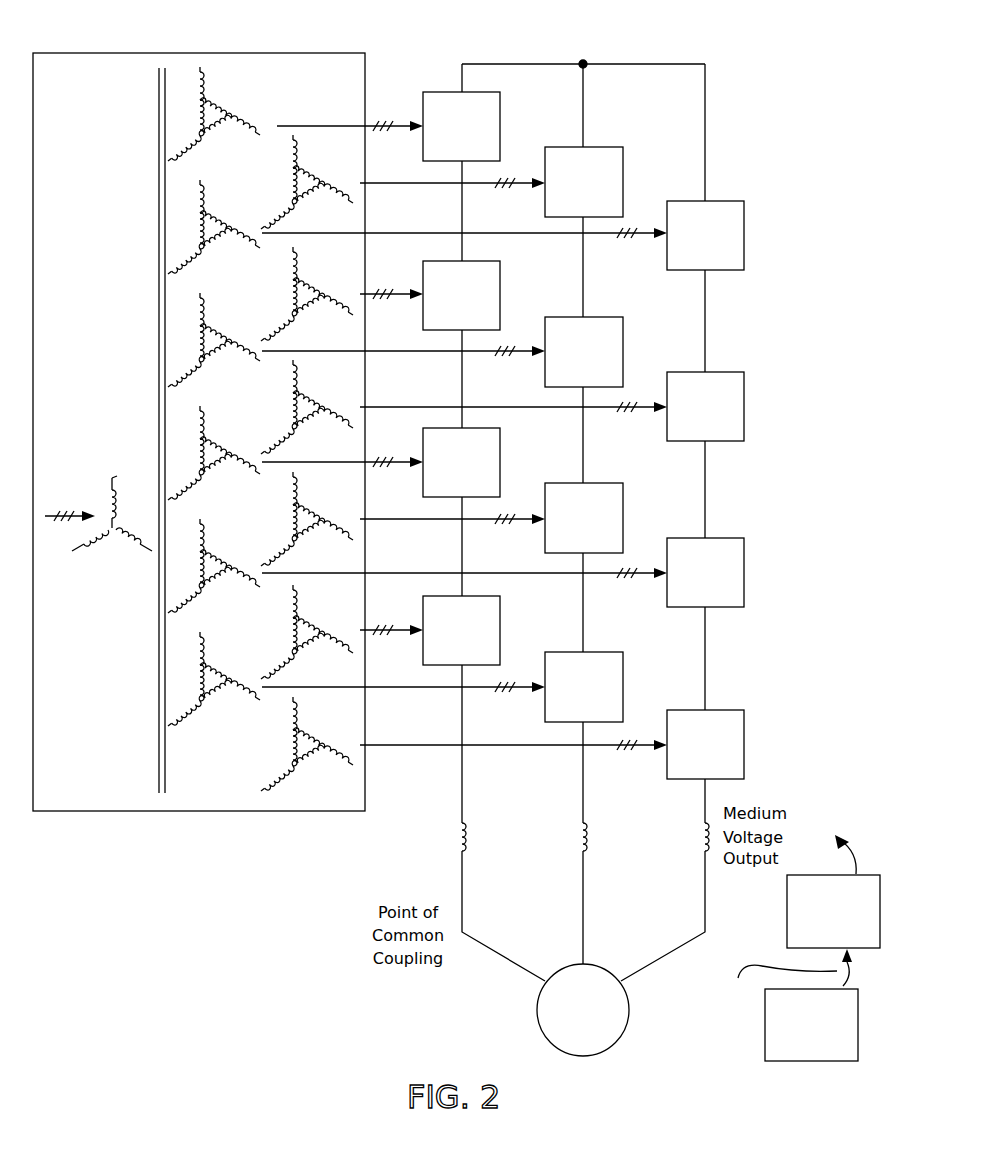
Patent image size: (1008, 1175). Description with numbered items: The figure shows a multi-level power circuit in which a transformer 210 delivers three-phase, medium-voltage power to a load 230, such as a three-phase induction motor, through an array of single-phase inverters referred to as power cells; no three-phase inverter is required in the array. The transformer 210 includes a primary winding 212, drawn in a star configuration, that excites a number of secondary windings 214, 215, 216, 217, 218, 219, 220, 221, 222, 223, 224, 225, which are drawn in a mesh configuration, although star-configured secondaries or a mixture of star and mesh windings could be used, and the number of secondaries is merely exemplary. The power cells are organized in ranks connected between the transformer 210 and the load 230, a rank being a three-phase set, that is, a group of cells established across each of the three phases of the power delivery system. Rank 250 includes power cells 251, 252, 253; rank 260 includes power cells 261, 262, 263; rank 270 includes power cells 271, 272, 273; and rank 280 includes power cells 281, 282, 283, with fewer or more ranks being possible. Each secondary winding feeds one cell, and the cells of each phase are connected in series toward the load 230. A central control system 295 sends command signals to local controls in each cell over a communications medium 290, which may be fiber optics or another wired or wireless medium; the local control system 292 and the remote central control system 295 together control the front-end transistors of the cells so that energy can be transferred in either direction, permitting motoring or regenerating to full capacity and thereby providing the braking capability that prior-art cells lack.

The transformer 210 is at (100, 48).
The primary winding 212 is at (102, 480).
The secondary winding 214 is at (240, 92).
The secondary winding 215 is at (333, 160).
The secondary winding 216 is at (240, 205).
The secondary winding 217 is at (333, 272).
The secondary winding 218 is at (240, 318).
The secondary winding 219 is at (333, 385).
The secondary winding 220 is at (240, 431).
The secondary winding 221 is at (333, 497).
The secondary winding 222 is at (240, 544).
The secondary winding 223 is at (333, 610).
The secondary winding 224 is at (240, 657).
The secondary winding 225 is at (333, 722).
The load 230 is at (620, 1038).
The rank 250 is at (800, 100).
The power cell 251 is at (503, 125).
The power cell 252 is at (626, 187).
The power cell 253 is at (747, 238).
The rank 260 is at (800, 283).
The power cell 261 is at (503, 297).
The power cell 262 is at (626, 361).
The power cell 263 is at (747, 407).
The rank 270 is at (800, 453).
The power cell 271 is at (503, 475).
The power cell 272 is at (626, 537).
The power cell 273 is at (747, 575).
The rank 280 is at (800, 623).
The power cell 281 is at (503, 642).
The power cell 282 is at (626, 707).
The power cell 283 is at (747, 750).
The communications medium 290 is at (771, 989).
The local control system 292 is at (783, 898).
The central control system 295 is at (783, 1063).